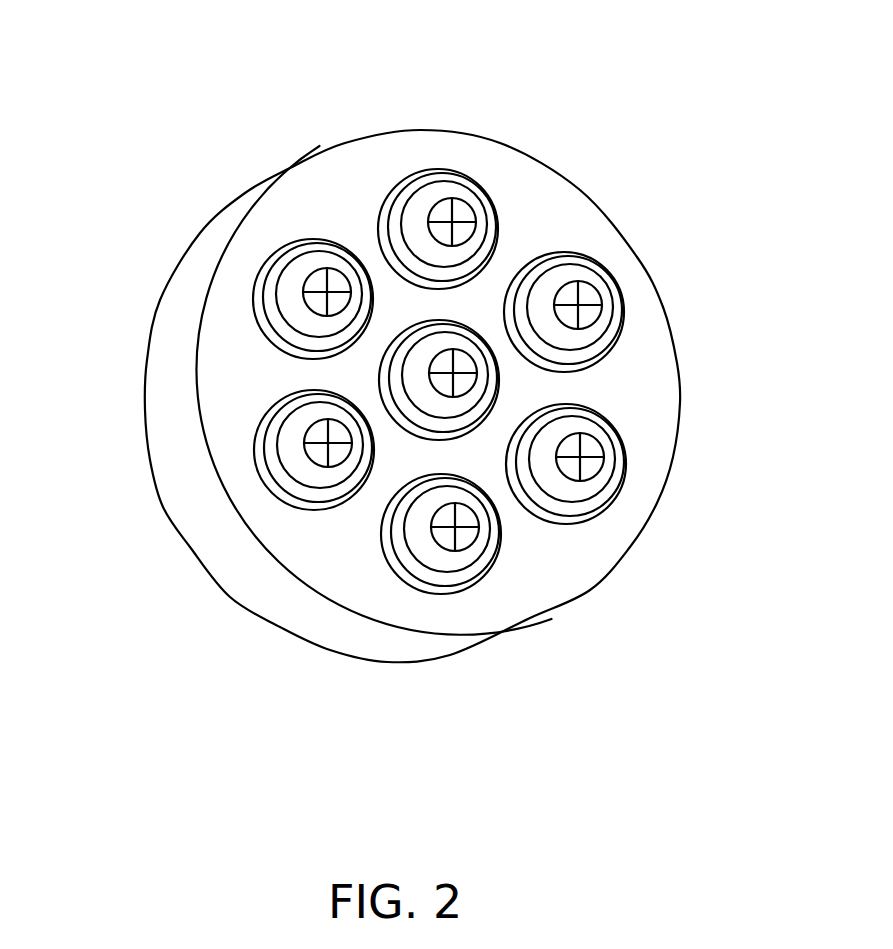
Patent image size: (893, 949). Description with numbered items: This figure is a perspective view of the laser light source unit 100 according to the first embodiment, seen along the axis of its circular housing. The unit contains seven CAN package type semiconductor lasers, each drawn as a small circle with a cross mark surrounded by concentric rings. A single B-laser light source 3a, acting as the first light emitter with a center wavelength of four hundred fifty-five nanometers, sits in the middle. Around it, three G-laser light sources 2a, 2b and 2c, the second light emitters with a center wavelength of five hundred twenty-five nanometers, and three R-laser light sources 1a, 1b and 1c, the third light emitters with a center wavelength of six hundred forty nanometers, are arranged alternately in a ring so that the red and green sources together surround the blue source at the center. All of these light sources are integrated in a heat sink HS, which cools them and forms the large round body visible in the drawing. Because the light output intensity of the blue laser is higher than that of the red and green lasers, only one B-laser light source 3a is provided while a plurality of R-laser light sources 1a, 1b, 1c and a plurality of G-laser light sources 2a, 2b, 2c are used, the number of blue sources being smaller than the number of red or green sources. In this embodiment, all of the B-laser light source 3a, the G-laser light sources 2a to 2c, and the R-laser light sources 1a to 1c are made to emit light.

The laser light source unit 100 is at (332, 150).
The heat sink HS is at (163, 362).
The R-laser light source 1a is at (447, 198).
The R-laser light source 1b is at (293, 447).
The R-laser light source 1c is at (590, 479).
The G-laser light source 2a is at (455, 548).
The G-laser light source 2b is at (320, 262).
The G-laser light source 2c is at (582, 272).
The B-laser light source 3a is at (484, 376).